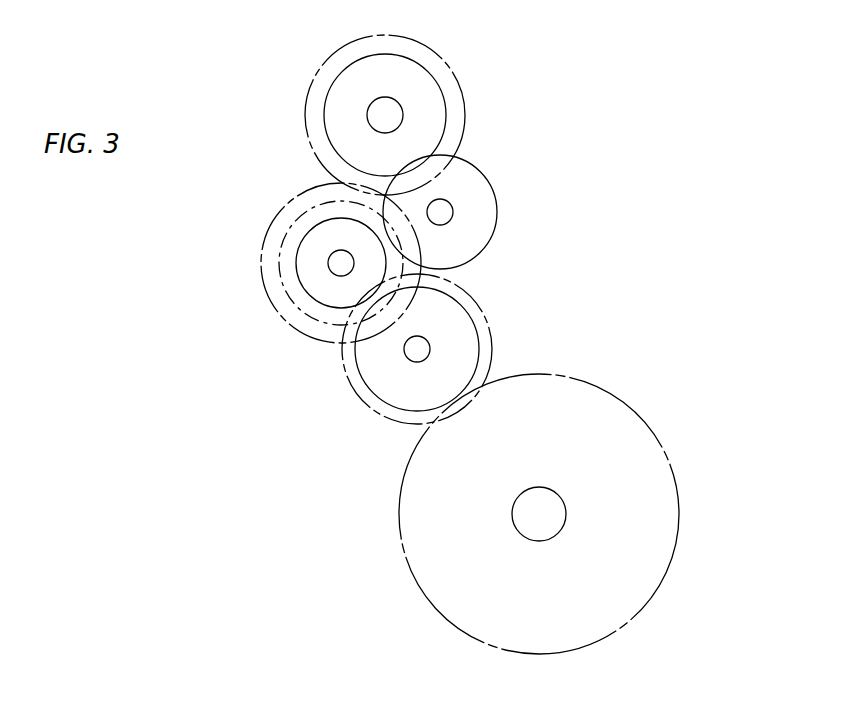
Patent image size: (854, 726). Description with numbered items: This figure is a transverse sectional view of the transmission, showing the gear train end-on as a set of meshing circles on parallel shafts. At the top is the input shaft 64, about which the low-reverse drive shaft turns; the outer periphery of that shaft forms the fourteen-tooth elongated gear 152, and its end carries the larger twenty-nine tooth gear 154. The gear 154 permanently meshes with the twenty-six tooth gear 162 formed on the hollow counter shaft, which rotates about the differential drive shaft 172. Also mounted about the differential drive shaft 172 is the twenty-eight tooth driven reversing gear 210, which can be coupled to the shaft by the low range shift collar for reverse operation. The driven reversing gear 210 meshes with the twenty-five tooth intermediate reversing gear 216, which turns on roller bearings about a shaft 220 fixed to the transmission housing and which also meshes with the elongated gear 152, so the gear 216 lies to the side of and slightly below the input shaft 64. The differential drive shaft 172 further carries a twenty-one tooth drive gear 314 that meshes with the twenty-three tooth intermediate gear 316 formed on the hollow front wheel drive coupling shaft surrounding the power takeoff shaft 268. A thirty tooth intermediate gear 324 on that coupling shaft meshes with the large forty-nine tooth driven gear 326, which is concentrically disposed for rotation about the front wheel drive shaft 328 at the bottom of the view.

The gear 154 is at (441, 58).
The elongated gear 152 is at (447, 122).
The input shaft 64 is at (403, 115).
The intermediate reversing gear 216 is at (497, 216).
The shaft 220 is at (453, 212).
The gear 162 is at (262, 242).
The driven reversing gear 210 is at (300, 310).
The drive gear 314 is at (302, 287).
The differential drive shaft 172 is at (329, 259).
The intermediate gear 316 is at (490, 318).
The intermediate gear 324 is at (370, 391).
The power takeoff shaft 268 is at (431, 349).
The driven gear 326 is at (680, 492).
The front wheel drive shaft 328 is at (553, 536).